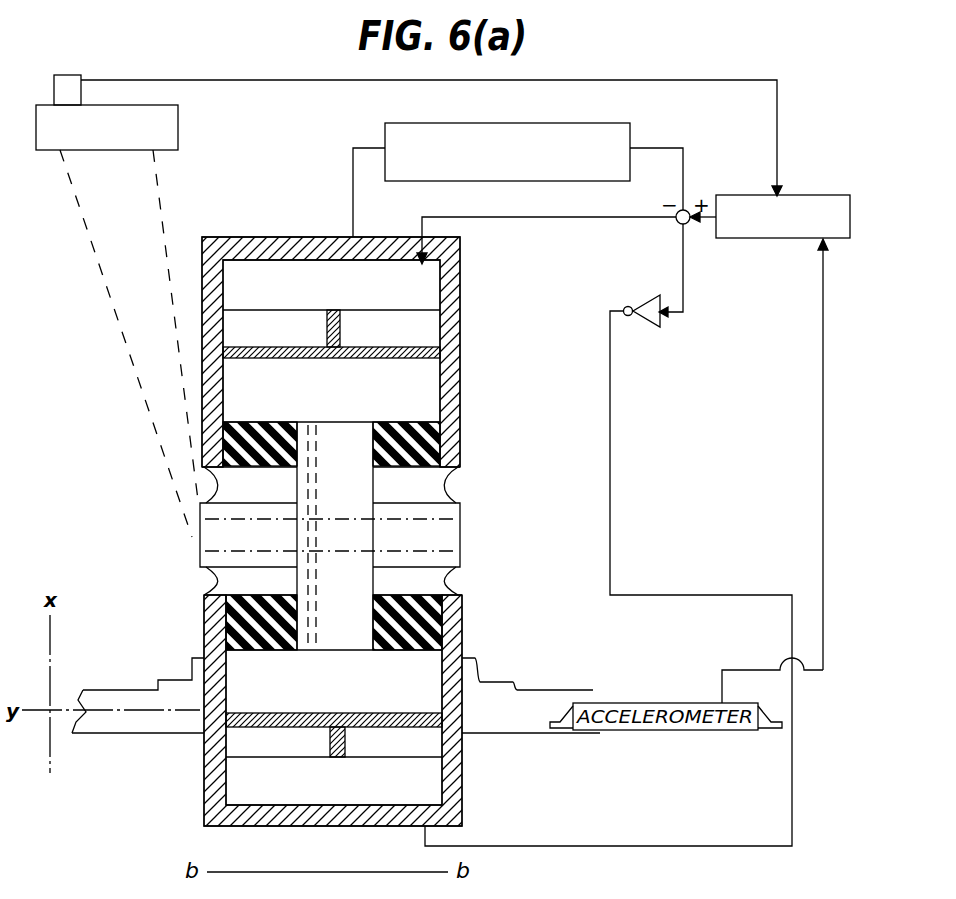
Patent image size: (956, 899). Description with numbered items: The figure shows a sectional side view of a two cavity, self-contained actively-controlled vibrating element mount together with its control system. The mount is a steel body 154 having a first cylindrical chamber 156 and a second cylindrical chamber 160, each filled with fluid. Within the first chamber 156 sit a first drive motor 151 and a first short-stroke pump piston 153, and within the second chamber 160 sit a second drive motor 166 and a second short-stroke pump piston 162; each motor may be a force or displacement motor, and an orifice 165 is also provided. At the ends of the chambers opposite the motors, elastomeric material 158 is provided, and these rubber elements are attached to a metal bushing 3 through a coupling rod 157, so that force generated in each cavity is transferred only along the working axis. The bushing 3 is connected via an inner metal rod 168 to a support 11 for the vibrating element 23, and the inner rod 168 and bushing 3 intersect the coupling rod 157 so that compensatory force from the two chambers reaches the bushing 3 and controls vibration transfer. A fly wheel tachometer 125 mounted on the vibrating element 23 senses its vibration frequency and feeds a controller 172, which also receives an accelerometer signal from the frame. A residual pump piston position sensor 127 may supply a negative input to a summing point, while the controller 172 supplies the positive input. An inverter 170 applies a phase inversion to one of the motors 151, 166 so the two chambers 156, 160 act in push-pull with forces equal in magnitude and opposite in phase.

The metal bushing 3 is at (204, 542).
The support 11 is at (163, 201).
The vibrating element 23 is at (176, 121).
The fly wheel tachometer 125 is at (79, 76).
The residual pump piston position sensor 127 is at (630, 136).
The first drive motor 151 is at (440, 284).
The first short-stroke pump piston 153 is at (440, 351).
The steel body 154 is at (449, 410).
The first cylindrical chamber 156 is at (226, 404).
The coupling rod 157 is at (356, 630).
The elastomeric material 158 is at (440, 547).
The second cylindrical chamber 160 is at (205, 725).
The second short-stroke pump piston 162 is at (234, 730).
The orifice 165 is at (305, 440).
The second drive motor 166 is at (425, 789).
The inner metal rod 168 is at (452, 555).
The inverter 170 is at (652, 330).
The controller 172 is at (779, 240).